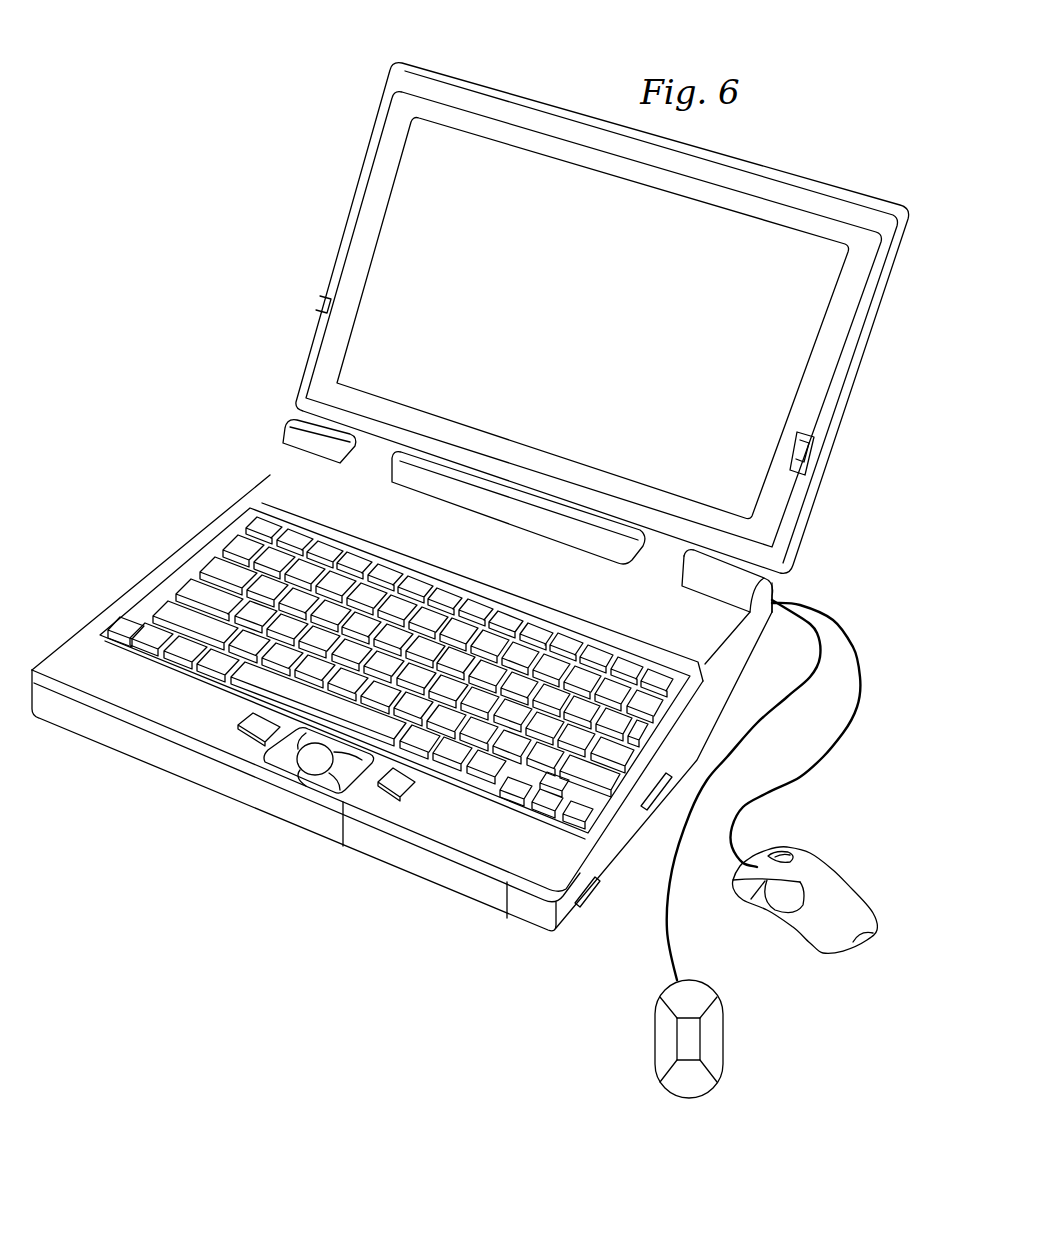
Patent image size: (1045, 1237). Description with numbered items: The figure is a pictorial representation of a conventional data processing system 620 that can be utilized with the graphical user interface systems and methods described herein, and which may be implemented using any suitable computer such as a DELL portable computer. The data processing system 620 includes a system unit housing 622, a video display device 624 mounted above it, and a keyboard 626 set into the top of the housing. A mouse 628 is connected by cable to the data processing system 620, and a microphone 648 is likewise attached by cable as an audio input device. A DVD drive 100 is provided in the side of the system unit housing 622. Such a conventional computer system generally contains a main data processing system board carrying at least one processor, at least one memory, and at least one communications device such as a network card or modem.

The data processing system 620 is at (170, 258).
The system unit housing 622 is at (278, 482).
The video display device 624 is at (559, 335).
The keyboard 626 is at (208, 540).
The DVD drive 100 is at (603, 872).
The mouse 628 is at (853, 952).
The microphone 648 is at (699, 1100).